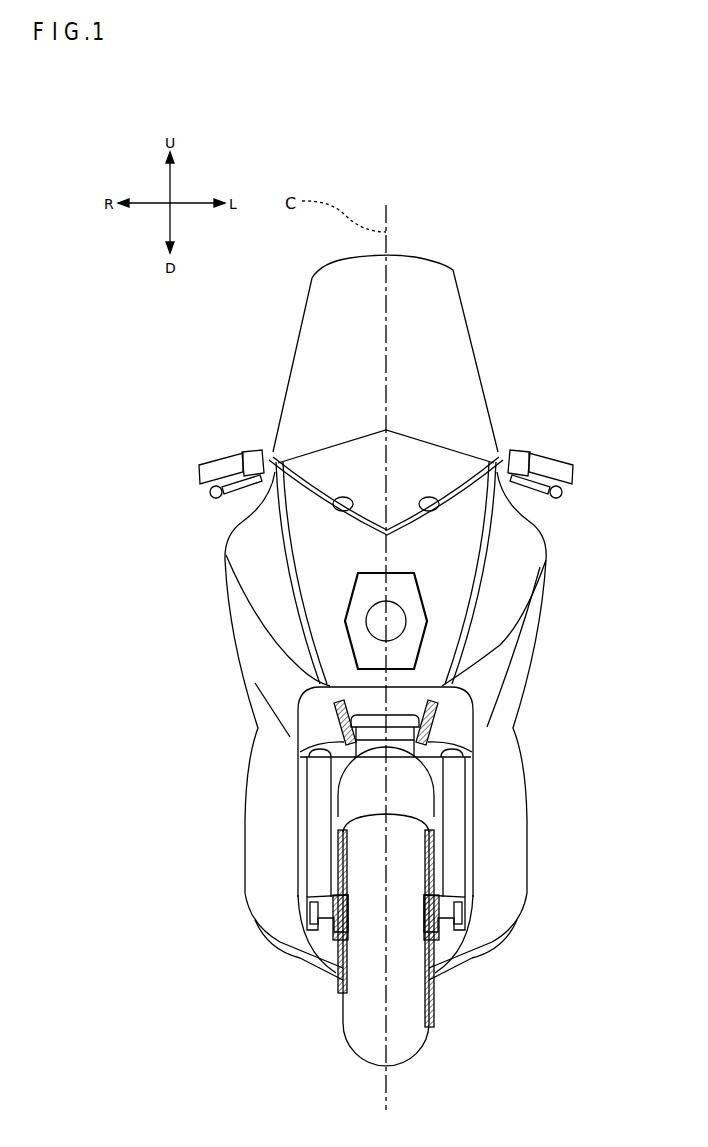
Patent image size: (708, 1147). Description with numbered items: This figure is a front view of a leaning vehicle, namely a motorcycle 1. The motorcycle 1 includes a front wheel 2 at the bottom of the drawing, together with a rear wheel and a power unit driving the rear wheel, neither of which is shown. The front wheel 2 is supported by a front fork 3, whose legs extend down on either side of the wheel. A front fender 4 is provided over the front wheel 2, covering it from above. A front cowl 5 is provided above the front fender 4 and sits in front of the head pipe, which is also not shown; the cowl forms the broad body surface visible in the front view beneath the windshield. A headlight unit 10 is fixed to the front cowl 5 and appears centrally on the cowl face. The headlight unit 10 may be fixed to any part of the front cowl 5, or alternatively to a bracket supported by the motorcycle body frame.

The motorcycle 1 is at (500, 263).
The front wheel 2 is at (403, 1030).
The front fork 3 is at (446, 870).
The front fender 4 is at (450, 800).
The front cowl 5 is at (449, 573).
The headlight unit 10 is at (422, 645).